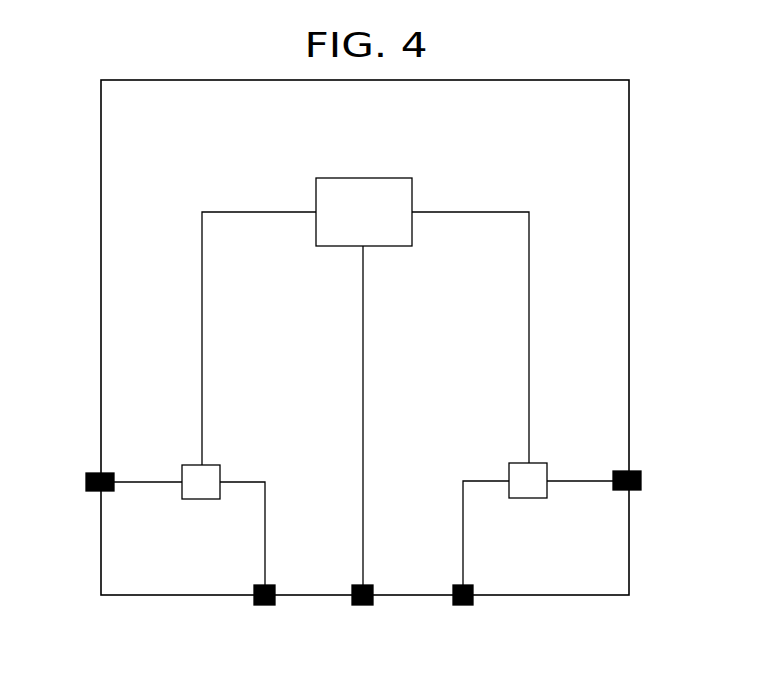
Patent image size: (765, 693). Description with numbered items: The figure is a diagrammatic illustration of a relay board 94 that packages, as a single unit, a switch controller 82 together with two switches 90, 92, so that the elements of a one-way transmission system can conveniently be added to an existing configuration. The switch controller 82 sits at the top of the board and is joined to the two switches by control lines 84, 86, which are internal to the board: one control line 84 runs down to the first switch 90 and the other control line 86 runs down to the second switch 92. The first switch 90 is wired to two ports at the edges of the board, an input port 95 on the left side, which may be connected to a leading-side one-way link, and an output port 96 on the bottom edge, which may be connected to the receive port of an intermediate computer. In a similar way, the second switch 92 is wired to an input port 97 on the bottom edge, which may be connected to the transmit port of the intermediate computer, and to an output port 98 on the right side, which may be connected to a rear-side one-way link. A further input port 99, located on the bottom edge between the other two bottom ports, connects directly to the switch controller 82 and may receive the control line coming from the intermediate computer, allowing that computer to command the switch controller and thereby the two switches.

The switch controller 82 is at (367, 178).
The control line 84 is at (202, 308).
The control line 86 is at (529, 307).
The switch 90 is at (192, 499).
The switch 92 is at (538, 524).
The relay board 94 is at (629, 198).
The input port 95 is at (86, 482).
The output port 96 is at (262, 605).
The input port 97 is at (461, 605).
The output port 98 is at (641, 481).
The input port 99 is at (361, 605).